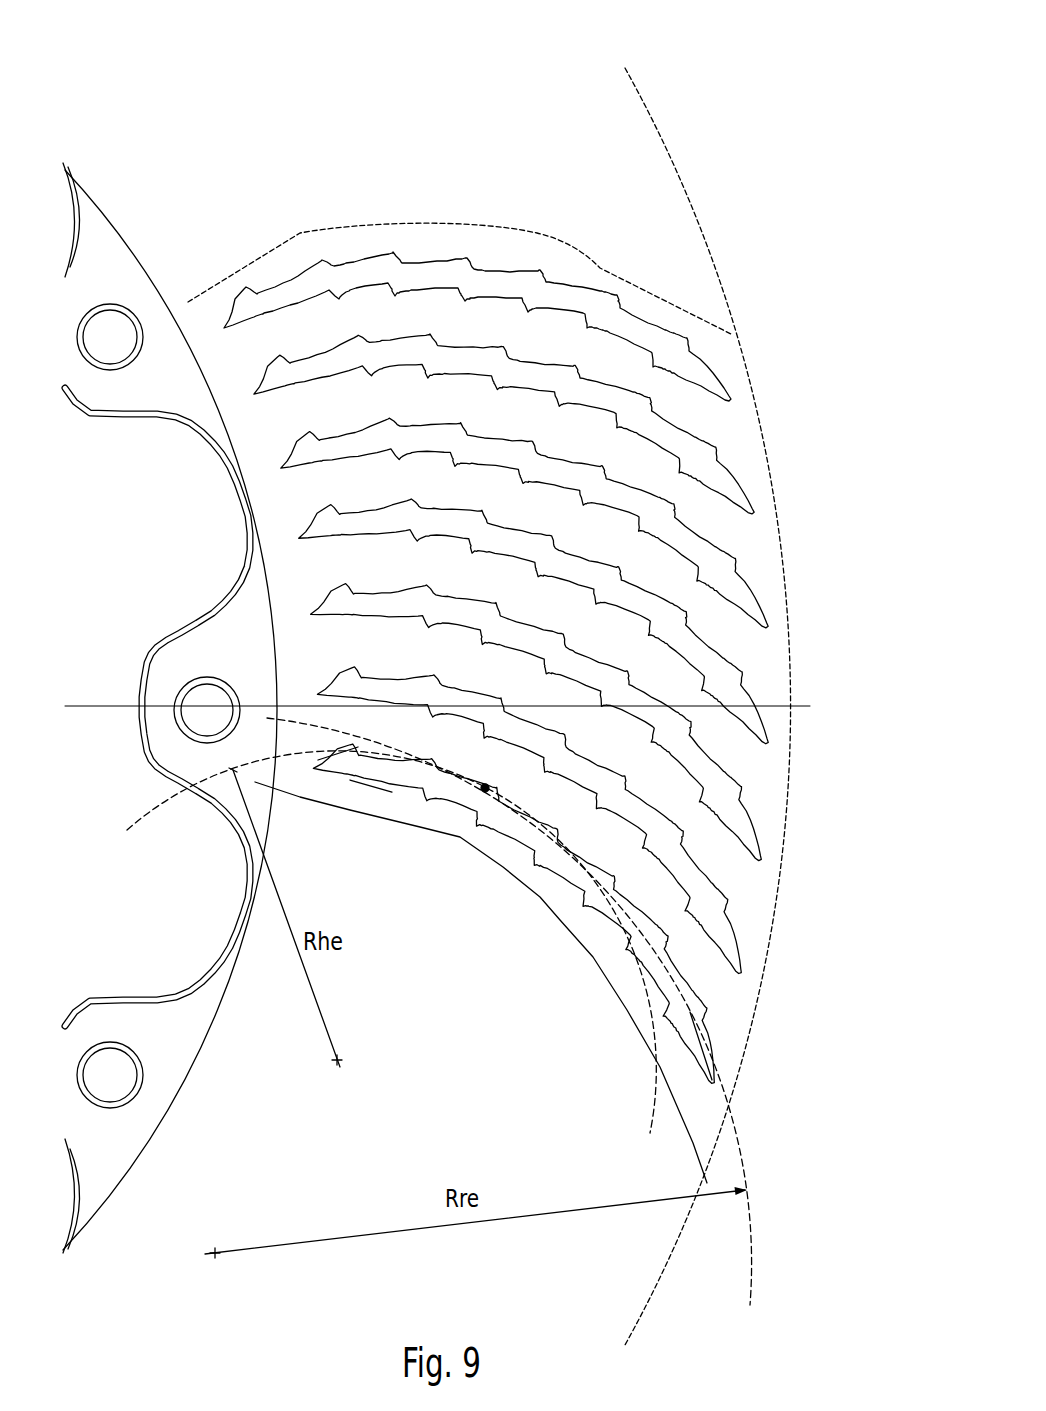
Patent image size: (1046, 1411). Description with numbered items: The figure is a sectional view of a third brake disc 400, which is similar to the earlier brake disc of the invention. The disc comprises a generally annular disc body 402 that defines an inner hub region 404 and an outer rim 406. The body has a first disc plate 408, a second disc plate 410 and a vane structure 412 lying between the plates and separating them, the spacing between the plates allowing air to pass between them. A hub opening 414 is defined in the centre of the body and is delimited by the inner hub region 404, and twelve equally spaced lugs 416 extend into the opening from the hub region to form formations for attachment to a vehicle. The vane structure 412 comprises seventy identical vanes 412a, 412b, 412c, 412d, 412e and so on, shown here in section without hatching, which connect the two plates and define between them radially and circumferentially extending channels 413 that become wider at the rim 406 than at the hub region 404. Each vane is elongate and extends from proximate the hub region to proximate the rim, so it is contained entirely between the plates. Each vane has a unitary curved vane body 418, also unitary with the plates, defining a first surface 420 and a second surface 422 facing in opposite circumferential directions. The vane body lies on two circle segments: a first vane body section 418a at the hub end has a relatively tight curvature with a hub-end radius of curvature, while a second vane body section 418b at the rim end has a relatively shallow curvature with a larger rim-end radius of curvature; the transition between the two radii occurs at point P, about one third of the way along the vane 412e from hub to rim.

The third brake disc 400 is at (88, 86).
The disc body 402 is at (640, 225).
The inner hub region 404 is at (242, 518).
The outer rim 406 is at (733, 318).
The first disc plate 408 is at (372, 259).
The second disc plate 410 is at (460, 132).
The vane structure 412 is at (558, 658).
The vane 412a is at (713, 575).
The vane 412b is at (725, 690).
The vane 412c is at (730, 803).
The vane 412d is at (715, 918).
The vane 412e is at (564, 893).
The channels 413 is at (505, 497).
The hub opening 414 is at (72, 659).
The lugs 416 is at (128, 287).
The vane body 418 is at (553, 850).
The first vane body section 418a is at (392, 772).
The second vane body section 418b is at (620, 940).
The first surface 420 is at (482, 785).
The second surface 422 is at (437, 797).